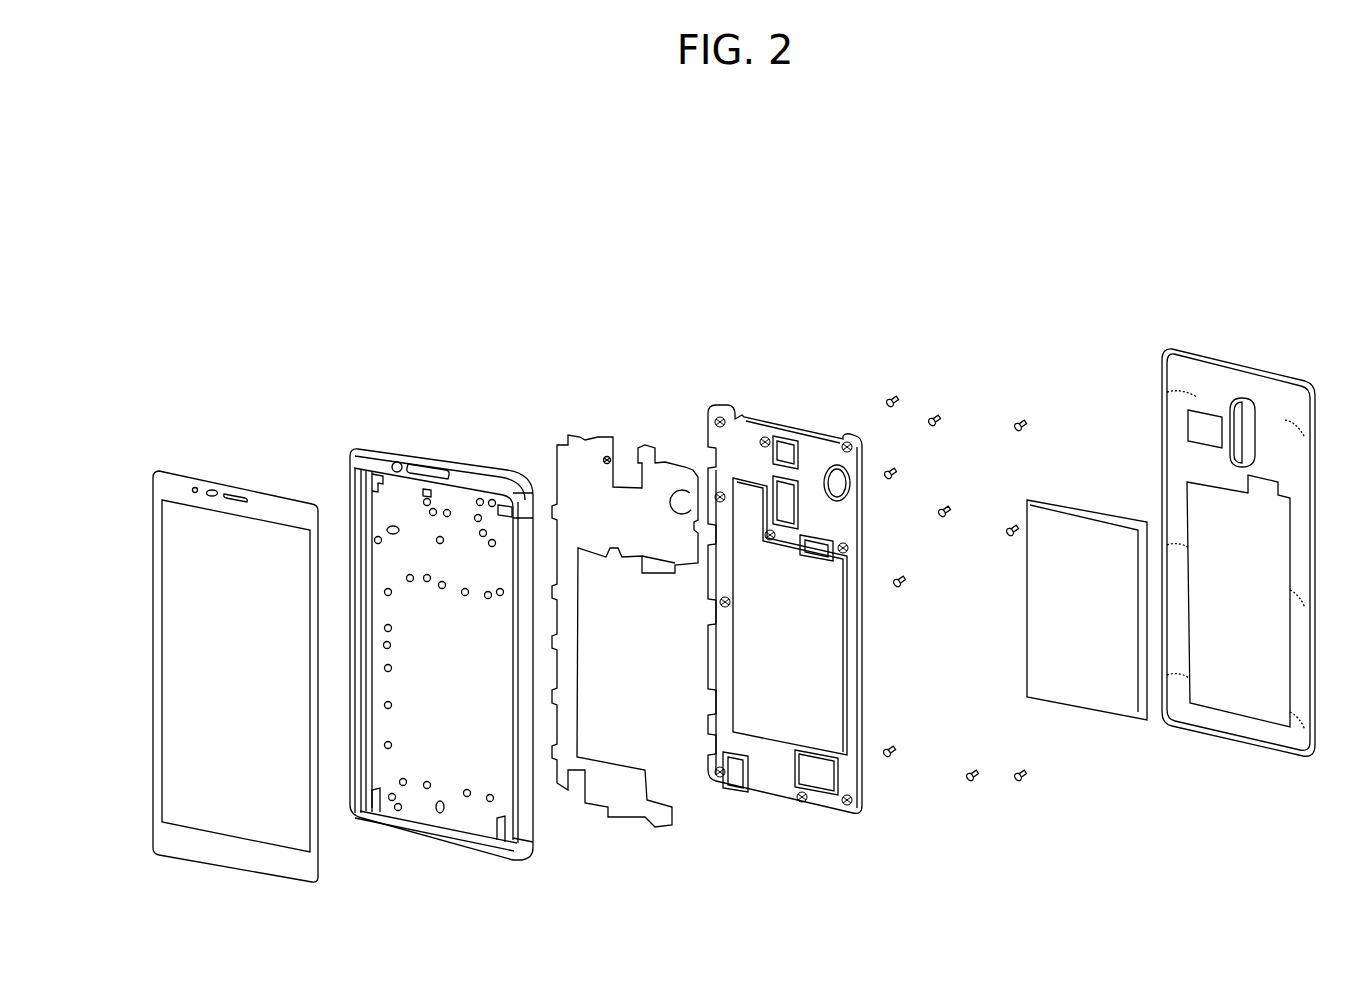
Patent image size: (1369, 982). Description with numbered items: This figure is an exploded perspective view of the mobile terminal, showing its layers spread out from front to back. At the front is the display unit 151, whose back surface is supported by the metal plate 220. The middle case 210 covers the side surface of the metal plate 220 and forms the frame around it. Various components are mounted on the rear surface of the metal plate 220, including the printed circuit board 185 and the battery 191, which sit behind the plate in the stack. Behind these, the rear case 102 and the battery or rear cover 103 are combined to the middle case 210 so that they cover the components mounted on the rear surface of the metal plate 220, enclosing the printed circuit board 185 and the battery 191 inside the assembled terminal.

The display unit 151 is at (268, 501).
The middle case 210 is at (402, 452).
The metal plate 220 is at (460, 499).
The printed circuit board 185 is at (665, 476).
The rear case 102 is at (811, 453).
The battery 191 is at (1087, 526).
The rear cover 103 is at (1276, 395).